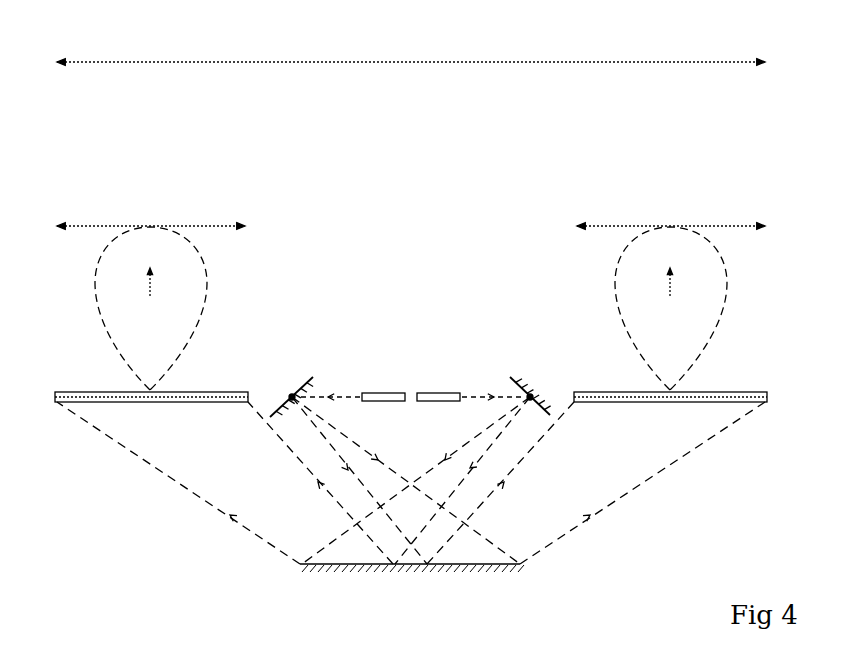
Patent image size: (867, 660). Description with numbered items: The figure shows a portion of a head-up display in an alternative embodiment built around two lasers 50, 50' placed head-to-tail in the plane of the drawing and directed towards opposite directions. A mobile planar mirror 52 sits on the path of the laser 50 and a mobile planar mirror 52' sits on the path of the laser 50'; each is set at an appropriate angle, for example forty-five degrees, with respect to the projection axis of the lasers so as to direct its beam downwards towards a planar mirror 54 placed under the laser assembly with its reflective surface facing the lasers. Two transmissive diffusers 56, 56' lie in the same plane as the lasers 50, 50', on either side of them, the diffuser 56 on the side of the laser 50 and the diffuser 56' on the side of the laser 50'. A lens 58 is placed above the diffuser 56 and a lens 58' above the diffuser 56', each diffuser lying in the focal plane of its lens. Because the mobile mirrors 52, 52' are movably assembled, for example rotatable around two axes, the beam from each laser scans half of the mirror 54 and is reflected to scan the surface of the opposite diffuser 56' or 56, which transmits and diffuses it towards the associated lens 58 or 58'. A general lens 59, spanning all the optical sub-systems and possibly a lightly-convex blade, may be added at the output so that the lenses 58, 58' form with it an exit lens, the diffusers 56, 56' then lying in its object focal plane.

The general lens 59 is at (712, 61).
The lens 58 is at (151, 285).
The lens 58' is at (671, 287).
The transmissive diffuser 56 is at (224, 455).
The transmissive diffuser 56' is at (597, 451).
The laser 50 is at (351, 372).
The laser 50' is at (470, 372).
The mobile planar mirror 52 is at (395, 454).
The mobile planar mirror 52' is at (426, 454).
The planar mirror 54 is at (357, 567).